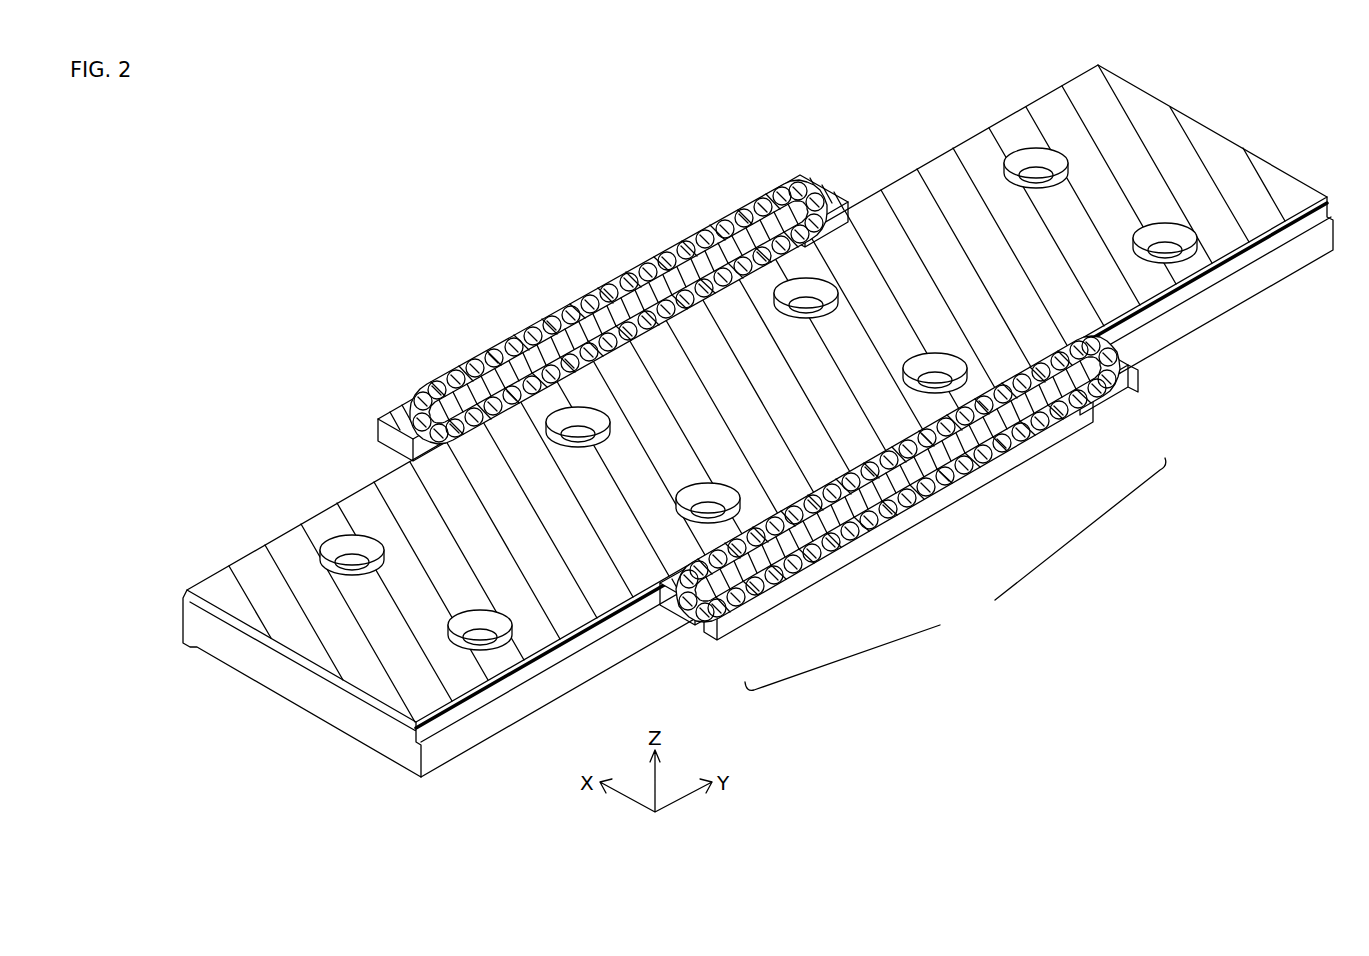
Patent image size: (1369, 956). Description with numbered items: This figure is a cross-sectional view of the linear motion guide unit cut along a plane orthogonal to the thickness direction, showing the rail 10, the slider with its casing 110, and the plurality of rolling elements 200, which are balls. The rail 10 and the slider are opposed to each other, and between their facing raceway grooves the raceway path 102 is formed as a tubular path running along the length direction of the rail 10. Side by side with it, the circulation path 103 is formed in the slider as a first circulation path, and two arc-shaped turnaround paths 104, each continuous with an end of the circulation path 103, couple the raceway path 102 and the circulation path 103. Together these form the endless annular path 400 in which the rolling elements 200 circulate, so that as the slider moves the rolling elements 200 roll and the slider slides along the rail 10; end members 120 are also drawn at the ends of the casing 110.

The rail 10 is at (372, 723).
The casing 110 is at (648, 275).
The rolling elements 200 is at (545, 338).
The end cap 120 is at (797, 188).
The raceway path 102 is at (930, 482).
The circulation path 103 is at (1022, 436).
The turnaround paths 104 is at (755, 597).
The annular path 400 is at (935, 541).